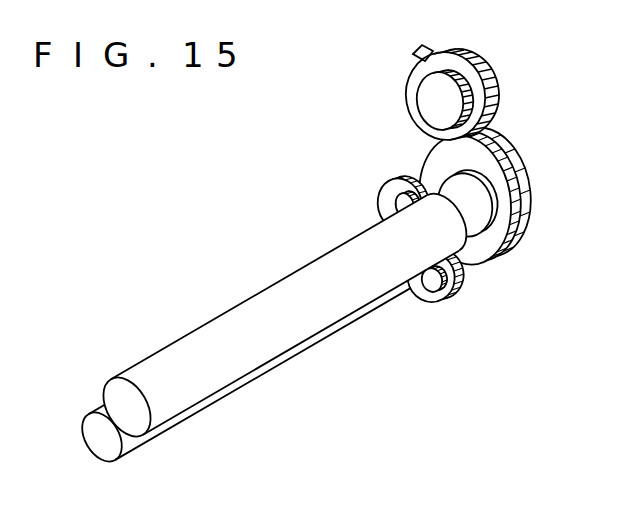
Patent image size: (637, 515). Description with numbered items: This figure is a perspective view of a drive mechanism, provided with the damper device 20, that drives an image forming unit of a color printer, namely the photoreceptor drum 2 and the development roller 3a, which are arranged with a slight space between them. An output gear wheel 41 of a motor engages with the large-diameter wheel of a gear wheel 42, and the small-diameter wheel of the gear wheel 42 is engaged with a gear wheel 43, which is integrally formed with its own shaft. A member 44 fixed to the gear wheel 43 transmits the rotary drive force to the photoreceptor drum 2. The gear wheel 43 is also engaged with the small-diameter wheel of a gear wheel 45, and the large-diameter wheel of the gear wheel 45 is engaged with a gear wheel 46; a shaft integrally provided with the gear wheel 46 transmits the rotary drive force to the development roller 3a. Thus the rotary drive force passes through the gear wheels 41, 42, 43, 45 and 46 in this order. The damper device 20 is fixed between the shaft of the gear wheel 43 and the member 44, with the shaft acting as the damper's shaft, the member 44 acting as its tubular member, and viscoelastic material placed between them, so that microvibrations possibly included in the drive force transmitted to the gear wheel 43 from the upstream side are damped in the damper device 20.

The photoreceptor drum 2 is at (193, 330).
The development roller 3a is at (133, 453).
The damper device 20 is at (483, 241).
The output gear wheel 41 is at (421, 47).
The gear wheel 42 is at (406, 98).
The gear wheel 43 is at (513, 145).
The member 44 is at (503, 202).
The gear wheel 45 is at (378, 193).
The gear wheel 46 is at (436, 303).